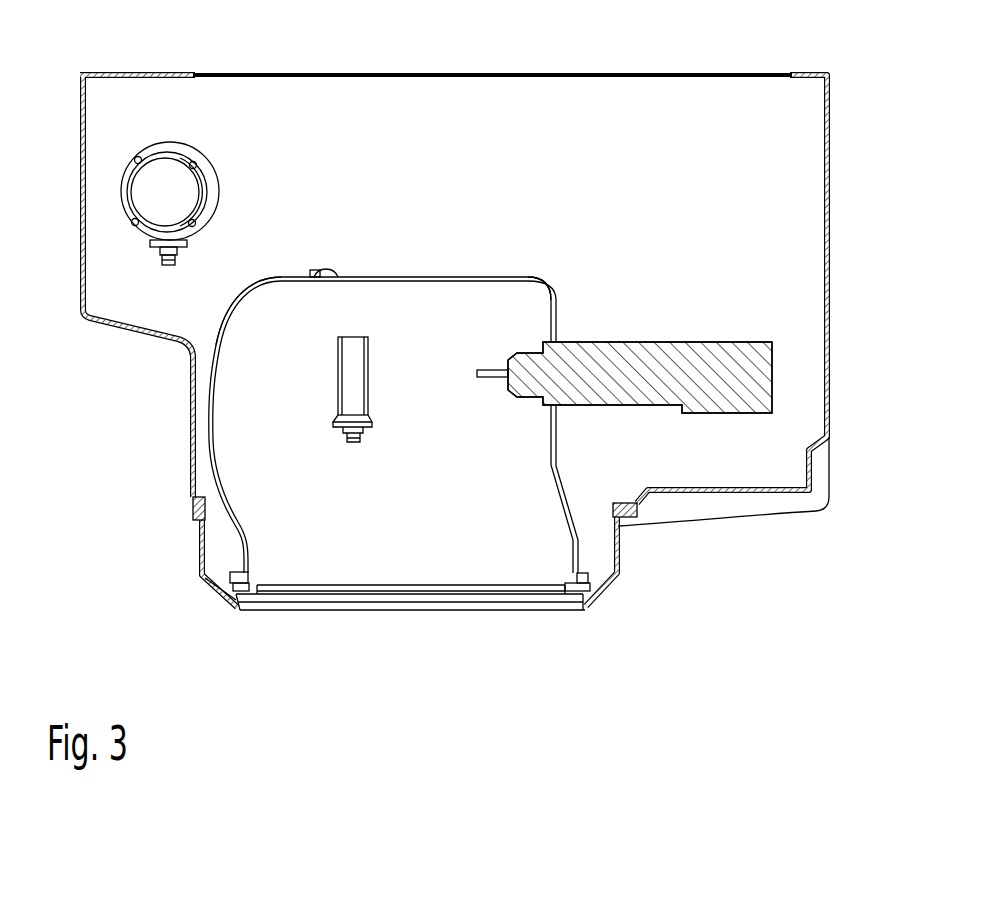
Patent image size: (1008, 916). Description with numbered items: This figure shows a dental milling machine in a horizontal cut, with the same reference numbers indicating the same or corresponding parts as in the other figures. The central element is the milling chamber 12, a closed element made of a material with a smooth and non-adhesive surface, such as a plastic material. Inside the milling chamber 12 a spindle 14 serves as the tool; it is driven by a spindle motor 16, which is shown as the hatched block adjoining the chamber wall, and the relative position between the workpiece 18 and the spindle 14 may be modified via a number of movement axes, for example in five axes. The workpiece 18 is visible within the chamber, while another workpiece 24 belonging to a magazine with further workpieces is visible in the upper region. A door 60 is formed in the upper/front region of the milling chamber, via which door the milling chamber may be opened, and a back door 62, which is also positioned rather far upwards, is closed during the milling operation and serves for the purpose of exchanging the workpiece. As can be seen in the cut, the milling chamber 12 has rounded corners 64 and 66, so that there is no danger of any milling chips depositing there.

The milling chamber 12 is at (589, 522).
The spindle 14 is at (490, 369).
The spindle motor 16 is at (757, 383).
The workpiece 18 is at (352, 384).
The workpiece 24 is at (163, 183).
The door 60 is at (408, 612).
The back door 62 is at (362, 277).
The rounded corner 64 is at (277, 299).
The rounded corner 66 is at (535, 299).